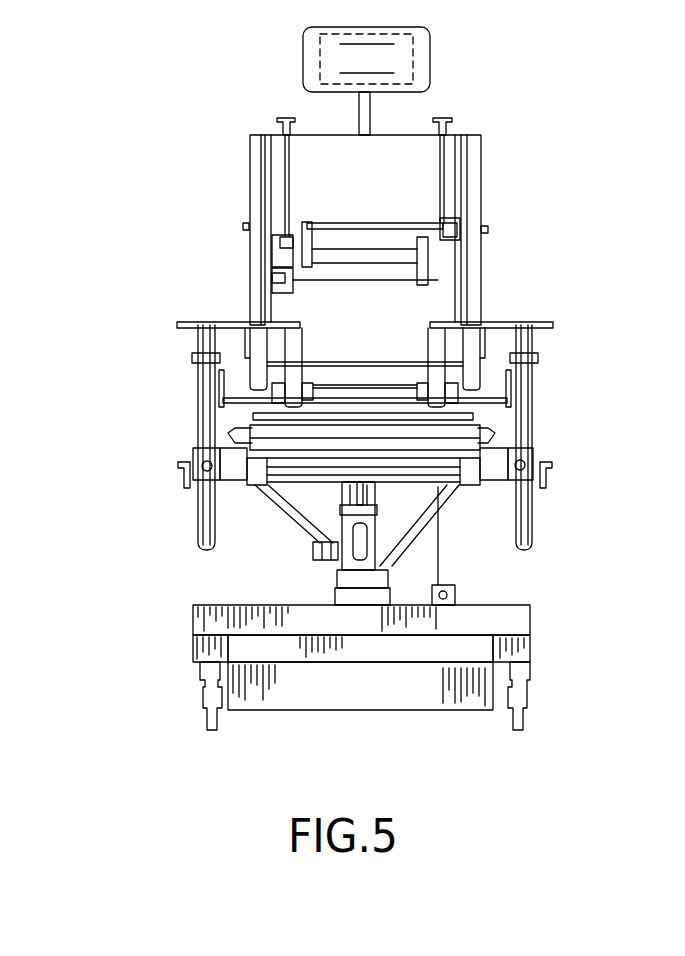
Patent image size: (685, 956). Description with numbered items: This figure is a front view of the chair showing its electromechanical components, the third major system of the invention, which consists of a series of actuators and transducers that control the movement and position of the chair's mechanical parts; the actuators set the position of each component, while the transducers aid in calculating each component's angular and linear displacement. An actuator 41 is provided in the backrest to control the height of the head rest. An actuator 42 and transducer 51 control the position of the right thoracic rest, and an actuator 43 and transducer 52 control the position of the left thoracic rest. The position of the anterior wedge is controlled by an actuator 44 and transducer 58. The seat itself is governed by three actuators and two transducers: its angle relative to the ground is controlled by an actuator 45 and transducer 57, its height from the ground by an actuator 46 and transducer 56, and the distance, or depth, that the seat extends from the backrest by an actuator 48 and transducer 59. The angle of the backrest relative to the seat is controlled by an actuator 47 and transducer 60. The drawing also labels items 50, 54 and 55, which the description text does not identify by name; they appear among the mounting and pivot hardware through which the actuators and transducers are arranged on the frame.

The actuator 41 is at (257, 220).
The actuator 42 is at (448, 236).
The actuator 43 is at (275, 278).
The actuator 44 is at (290, 463).
The actuator 45 is at (312, 546).
The actuator 46 is at (350, 592).
The actuator 47 is at (586, 435).
The actuator 48 is at (503, 529).
The upper block 50 is at (284, 237).
The transducer 51 is at (255, 218).
The transducer 52 is at (489, 229).
The left pivot block 54 is at (204, 458).
The right pivot block 55 is at (525, 462).
The transducer 56 is at (438, 605).
The transducer 57 is at (206, 602).
The transducer 58 is at (201, 527).
The transducer 59 is at (445, 488).
The transducer 60 is at (530, 390).